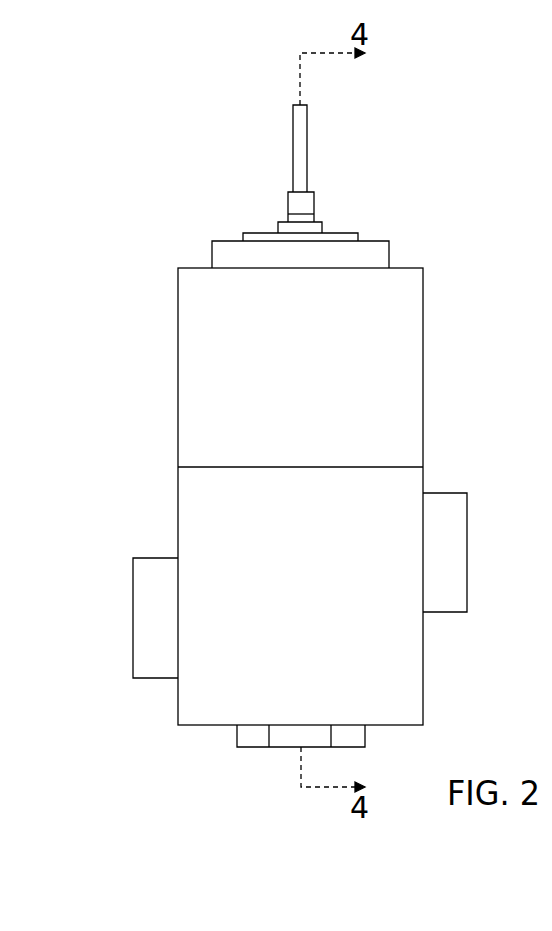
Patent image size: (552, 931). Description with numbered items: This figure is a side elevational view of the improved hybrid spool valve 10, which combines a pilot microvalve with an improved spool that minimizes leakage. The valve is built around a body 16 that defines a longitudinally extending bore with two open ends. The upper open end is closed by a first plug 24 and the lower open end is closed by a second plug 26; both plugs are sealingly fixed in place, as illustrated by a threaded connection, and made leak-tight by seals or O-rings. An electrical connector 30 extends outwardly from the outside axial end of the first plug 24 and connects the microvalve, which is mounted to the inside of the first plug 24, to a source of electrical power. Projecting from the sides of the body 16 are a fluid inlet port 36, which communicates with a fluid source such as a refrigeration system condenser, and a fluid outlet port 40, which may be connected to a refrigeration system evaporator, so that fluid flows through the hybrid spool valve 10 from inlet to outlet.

The hybrid spool valve 10 is at (150, 150).
The body 16 is at (183, 302).
The first plug 24 is at (225, 251).
The second plug 26 is at (251, 738).
The electrical connector 30 is at (293, 205).
The fluid inlet port 36 is at (467, 554).
The fluid outlet port 40 is at (133, 612).